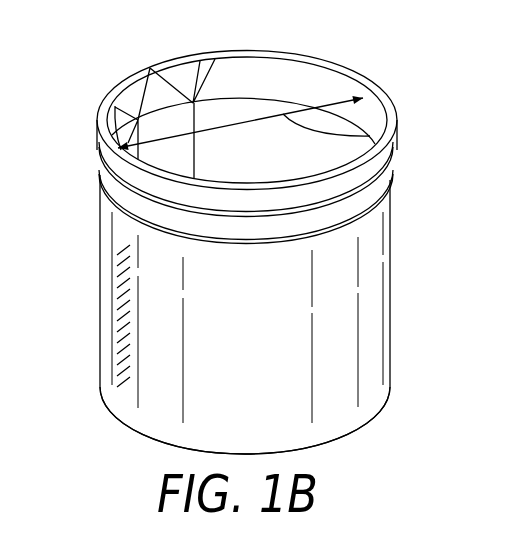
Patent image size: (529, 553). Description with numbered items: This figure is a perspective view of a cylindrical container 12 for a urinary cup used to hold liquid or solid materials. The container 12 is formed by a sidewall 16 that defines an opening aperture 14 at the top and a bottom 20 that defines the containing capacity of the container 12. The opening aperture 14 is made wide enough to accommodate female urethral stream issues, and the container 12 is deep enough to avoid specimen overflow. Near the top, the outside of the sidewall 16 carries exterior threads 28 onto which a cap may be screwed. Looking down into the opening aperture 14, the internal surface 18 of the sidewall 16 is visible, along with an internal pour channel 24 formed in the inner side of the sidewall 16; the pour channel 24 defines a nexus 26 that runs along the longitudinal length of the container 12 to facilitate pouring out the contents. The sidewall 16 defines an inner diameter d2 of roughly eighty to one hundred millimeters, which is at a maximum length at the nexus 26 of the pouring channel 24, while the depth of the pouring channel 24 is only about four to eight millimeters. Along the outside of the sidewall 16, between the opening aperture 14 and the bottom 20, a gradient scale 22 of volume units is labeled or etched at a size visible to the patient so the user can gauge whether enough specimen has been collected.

The container 12 is at (393, 212).
The opening aperture 14 is at (340, 95).
The sidewall 16 is at (385, 277).
The internal surface 18 is at (260, 117).
The bottom 20 is at (153, 438).
The gradient scale 22 is at (122, 312).
The internal pour channel 24 is at (150, 125).
The nexus 26 is at (150, 68).
The exterior threads 28 is at (106, 174).
The inner diameter d2 is at (375, 130).